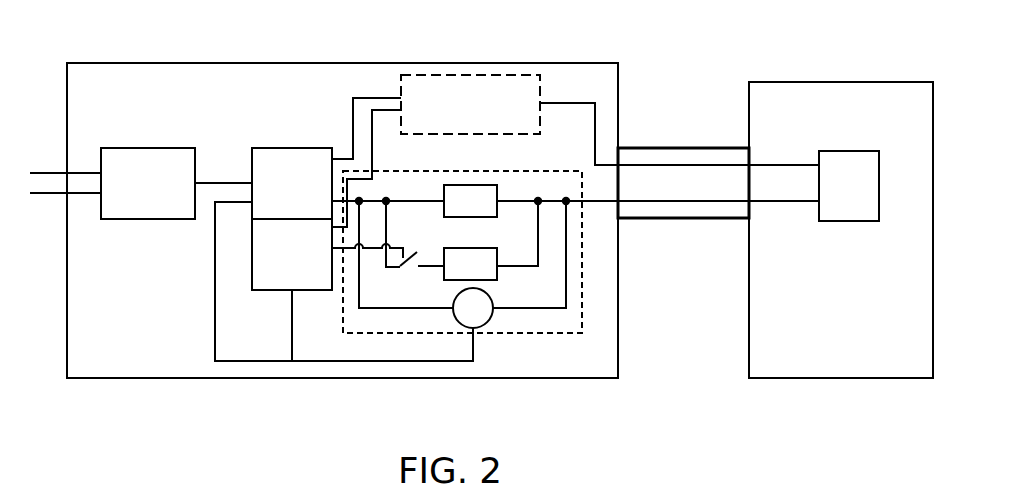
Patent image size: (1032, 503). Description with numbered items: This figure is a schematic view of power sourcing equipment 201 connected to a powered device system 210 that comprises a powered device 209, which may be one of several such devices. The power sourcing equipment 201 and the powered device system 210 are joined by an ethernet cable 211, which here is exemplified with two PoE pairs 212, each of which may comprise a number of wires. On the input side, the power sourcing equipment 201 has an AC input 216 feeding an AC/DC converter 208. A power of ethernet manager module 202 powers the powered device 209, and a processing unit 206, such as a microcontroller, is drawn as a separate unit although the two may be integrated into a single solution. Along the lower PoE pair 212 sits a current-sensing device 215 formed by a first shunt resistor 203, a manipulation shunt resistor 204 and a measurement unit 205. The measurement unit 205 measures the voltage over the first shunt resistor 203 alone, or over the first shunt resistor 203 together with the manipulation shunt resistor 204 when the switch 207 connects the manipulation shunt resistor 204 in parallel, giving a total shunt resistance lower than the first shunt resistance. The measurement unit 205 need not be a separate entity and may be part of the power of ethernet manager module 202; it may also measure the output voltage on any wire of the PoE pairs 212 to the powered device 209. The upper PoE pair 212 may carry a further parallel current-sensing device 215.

The power sourcing equipment 201 is at (343, 63).
The power of ethernet manager module 202 is at (311, 195).
The first shunt resistor 203 is at (489, 213).
The manipulation shunt resistor 204 is at (489, 276).
The measurement unit 205 is at (482, 328).
The processing unit 206 is at (311, 266).
The switch 207 is at (395, 278).
The AC/DC converter 208 is at (167, 195).
The powered device 209 is at (868, 198).
The powered device system 210 is at (848, 82).
The ethernet cable 211 is at (668, 148).
The PoE pairs 212 is at (663, 218).
The current-sensing device 215 is at (489, 116).
The AC input 216 is at (42, 173).